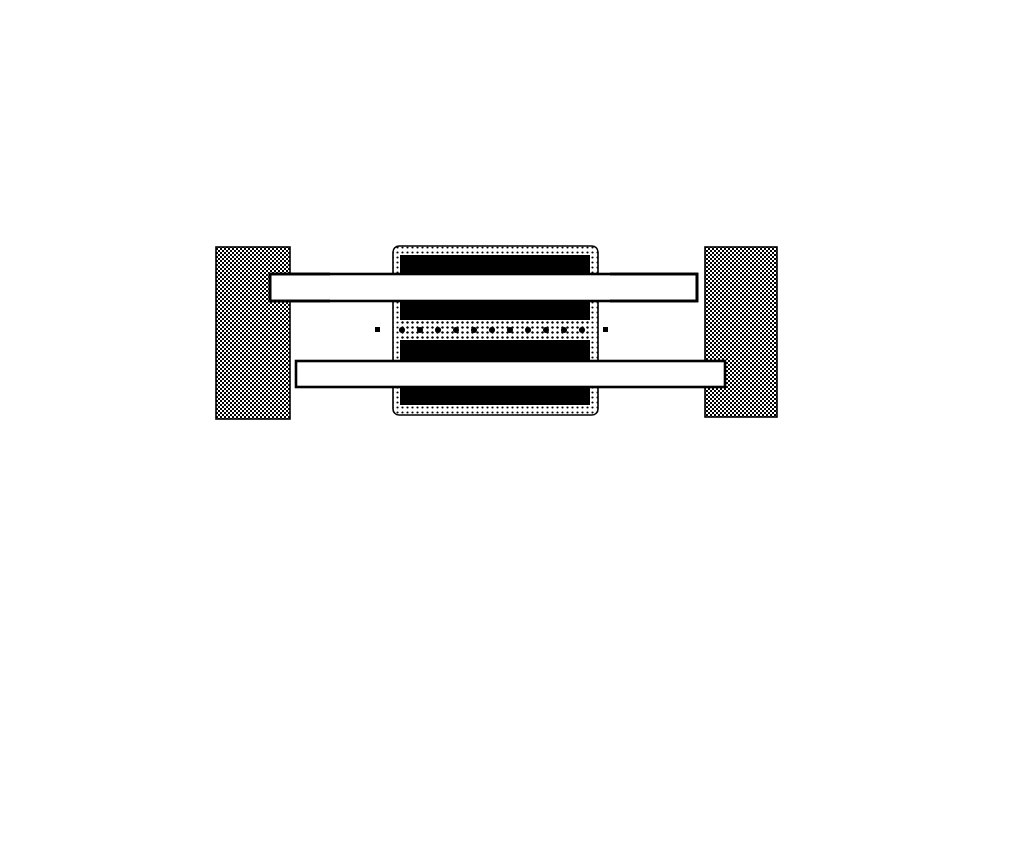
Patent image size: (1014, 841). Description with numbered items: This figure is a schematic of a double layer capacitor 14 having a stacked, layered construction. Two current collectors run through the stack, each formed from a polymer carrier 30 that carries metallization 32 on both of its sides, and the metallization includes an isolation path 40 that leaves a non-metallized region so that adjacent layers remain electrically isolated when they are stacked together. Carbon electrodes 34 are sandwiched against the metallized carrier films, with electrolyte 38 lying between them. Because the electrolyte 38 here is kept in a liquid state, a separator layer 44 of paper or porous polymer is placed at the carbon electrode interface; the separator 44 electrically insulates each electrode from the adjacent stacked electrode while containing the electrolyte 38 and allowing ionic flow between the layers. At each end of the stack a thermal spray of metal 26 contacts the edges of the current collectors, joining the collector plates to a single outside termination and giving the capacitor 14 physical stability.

The double layer capacitor 14 is at (165, 185).
The thermal spray of metal 26 is at (773, 322).
The polymer carrier 30 is at (287, 288).
The metallization 32 is at (329, 277).
The electrode 34 is at (556, 258).
The electrolyte 38 is at (414, 250).
The isolation path 40 is at (613, 275).
The separator layer 44 is at (387, 327).